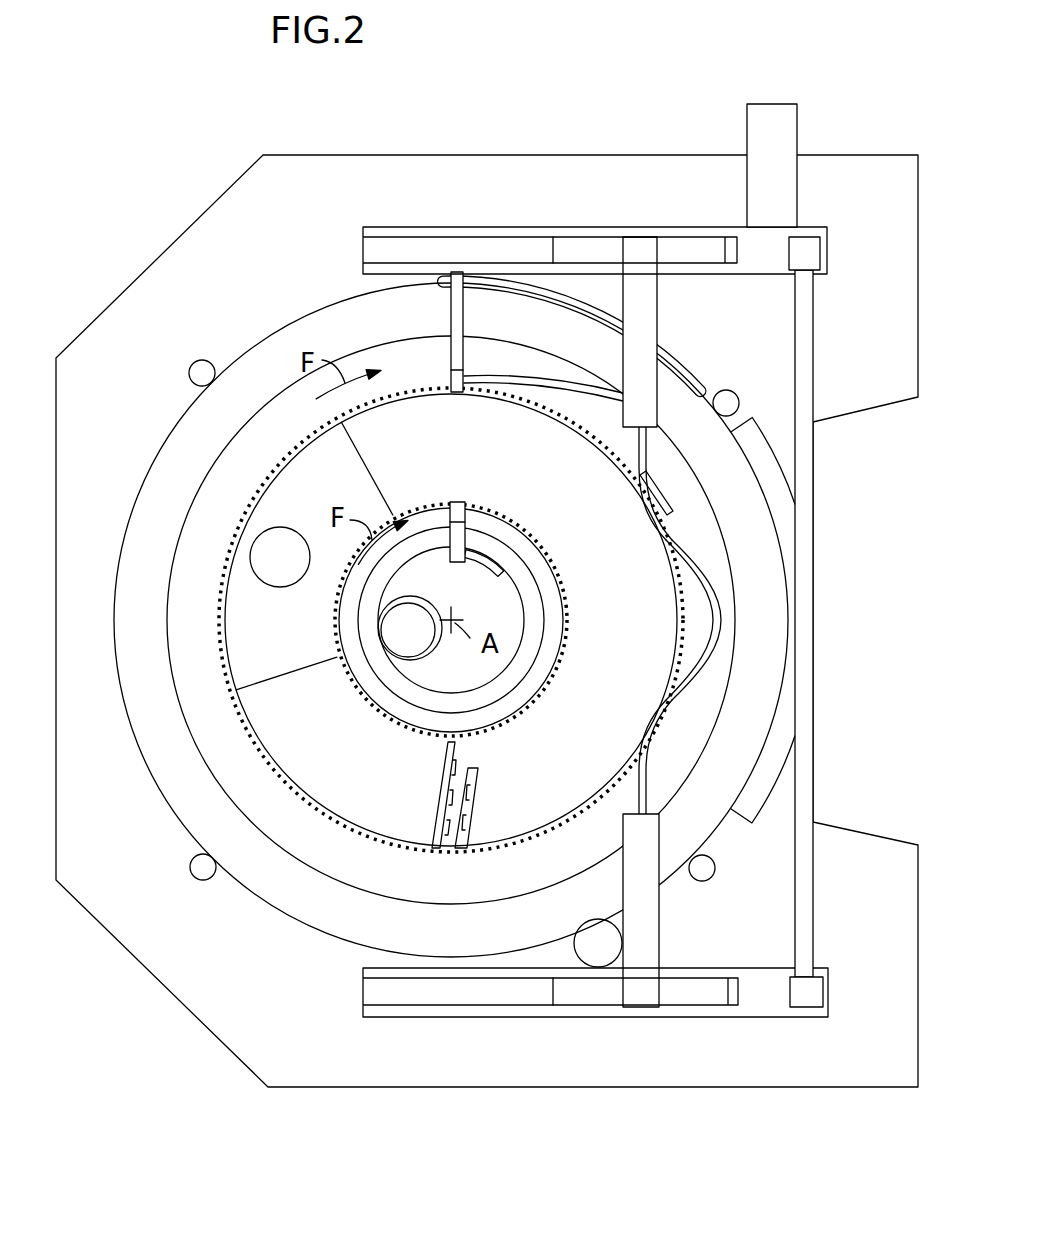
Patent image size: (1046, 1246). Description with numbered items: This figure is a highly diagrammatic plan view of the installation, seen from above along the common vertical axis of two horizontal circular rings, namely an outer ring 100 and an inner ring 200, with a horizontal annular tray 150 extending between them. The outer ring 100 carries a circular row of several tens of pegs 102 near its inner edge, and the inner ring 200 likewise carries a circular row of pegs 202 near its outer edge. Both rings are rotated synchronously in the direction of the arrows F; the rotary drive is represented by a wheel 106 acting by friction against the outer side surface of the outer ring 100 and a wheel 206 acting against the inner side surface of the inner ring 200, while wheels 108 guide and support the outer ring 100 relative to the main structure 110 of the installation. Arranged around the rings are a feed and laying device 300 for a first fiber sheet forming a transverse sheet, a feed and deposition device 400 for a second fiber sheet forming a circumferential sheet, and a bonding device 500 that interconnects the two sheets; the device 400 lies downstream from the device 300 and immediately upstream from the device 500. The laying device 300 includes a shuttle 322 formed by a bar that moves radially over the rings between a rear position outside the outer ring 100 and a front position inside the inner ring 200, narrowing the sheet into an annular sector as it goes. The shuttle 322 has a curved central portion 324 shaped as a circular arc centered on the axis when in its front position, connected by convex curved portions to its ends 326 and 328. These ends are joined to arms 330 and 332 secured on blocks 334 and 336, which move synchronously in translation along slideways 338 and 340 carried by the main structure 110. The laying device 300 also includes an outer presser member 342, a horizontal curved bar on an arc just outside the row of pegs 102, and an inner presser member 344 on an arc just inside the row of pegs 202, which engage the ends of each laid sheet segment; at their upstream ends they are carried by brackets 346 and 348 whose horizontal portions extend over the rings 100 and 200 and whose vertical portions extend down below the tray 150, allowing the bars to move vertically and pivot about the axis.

The outer ring 100 is at (490, 883).
The pegs 102 is at (268, 755).
The wheel 106 is at (585, 946).
The wheels 108 is at (202, 366).
The main structure 110 is at (345, 175).
The annular tray 150 is at (557, 783).
The inner ring 200 is at (520, 695).
The pegs 202 is at (573, 610).
The wheel 206 is at (397, 620).
The feed and laying device 300 is at (820, 632).
The shuttle 322 is at (640, 745).
The central portion 324 is at (712, 613).
The end of shuttle 326 is at (641, 801).
The end of shuttle 328 is at (652, 432).
The arm 330 is at (641, 956).
The arm 332 is at (645, 240).
The block 334 is at (695, 990).
The block 336 is at (678, 250).
The slideway 338 is at (520, 995).
The slideway 340 is at (497, 246).
The outer presser member 342 is at (575, 385).
The inner presser member 344 is at (516, 524).
The bracket 346 is at (455, 319).
The bracket 348 is at (458, 500).
The feed and deposition device 400 is at (429, 764).
The bonding device 500 is at (305, 513).